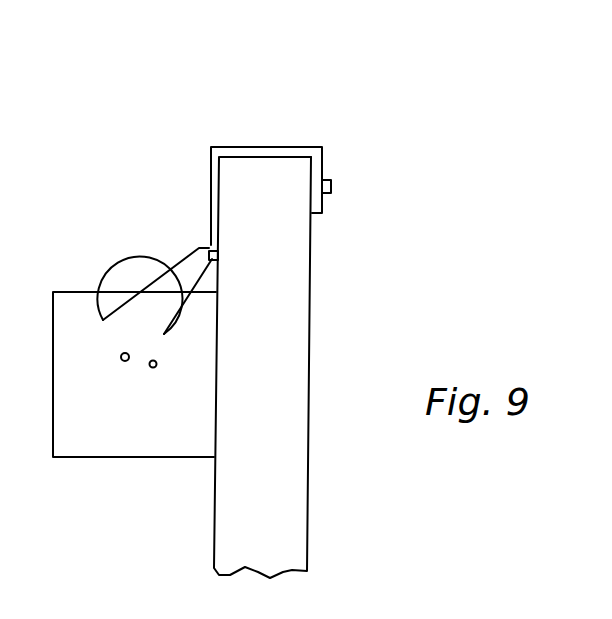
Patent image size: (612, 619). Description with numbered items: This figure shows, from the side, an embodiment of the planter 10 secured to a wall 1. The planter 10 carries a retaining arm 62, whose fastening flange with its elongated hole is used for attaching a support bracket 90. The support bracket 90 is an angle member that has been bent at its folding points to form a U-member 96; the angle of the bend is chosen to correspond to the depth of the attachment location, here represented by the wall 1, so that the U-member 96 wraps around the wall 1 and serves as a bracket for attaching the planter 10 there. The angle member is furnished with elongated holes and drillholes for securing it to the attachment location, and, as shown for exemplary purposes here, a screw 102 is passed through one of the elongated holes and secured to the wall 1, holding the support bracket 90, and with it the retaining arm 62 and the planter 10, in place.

The wall 1 is at (269, 398).
The planter 10 is at (120, 466).
The retaining arm 62 is at (151, 305).
The support bracket 90 is at (303, 144).
The U-member 96 is at (225, 147).
The screw 102 is at (331, 187).